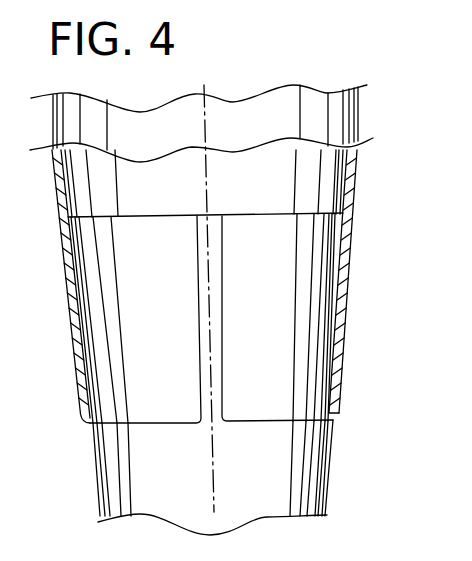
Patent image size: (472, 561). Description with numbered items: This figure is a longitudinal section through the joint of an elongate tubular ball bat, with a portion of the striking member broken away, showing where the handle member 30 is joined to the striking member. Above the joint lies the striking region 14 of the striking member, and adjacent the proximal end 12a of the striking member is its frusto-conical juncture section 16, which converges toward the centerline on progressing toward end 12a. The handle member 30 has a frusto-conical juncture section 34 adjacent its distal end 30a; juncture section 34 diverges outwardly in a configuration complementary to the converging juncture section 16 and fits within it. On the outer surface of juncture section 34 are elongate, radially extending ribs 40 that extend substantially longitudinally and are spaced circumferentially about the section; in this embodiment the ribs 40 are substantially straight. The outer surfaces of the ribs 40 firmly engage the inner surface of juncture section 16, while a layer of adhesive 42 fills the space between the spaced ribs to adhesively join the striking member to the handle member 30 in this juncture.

The striking region 14 is at (337, 111).
The frusto-conical juncture section of the striking member 16 is at (348, 288).
The layer of adhesive 42 is at (342, 330).
The distal end of handle member 30a is at (248, 213).
The frusto-conical juncture section of the handle member 34 is at (282, 365).
The proximal end of striking member 12a is at (334, 418).
The handle member 30 is at (328, 498).
The ribs 40 is at (216, 297).